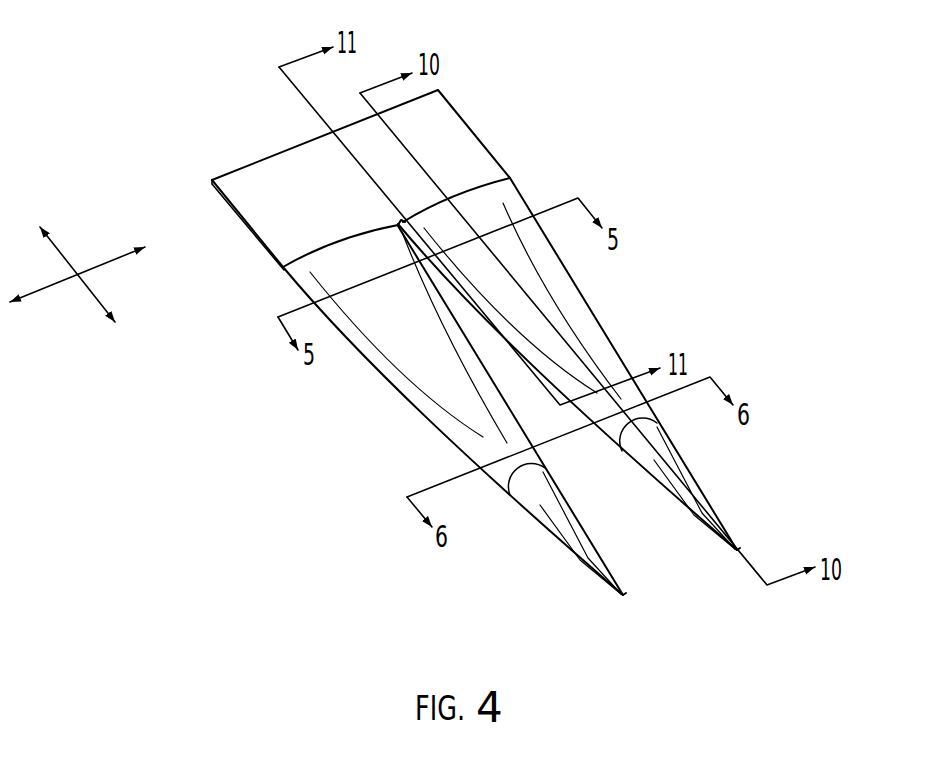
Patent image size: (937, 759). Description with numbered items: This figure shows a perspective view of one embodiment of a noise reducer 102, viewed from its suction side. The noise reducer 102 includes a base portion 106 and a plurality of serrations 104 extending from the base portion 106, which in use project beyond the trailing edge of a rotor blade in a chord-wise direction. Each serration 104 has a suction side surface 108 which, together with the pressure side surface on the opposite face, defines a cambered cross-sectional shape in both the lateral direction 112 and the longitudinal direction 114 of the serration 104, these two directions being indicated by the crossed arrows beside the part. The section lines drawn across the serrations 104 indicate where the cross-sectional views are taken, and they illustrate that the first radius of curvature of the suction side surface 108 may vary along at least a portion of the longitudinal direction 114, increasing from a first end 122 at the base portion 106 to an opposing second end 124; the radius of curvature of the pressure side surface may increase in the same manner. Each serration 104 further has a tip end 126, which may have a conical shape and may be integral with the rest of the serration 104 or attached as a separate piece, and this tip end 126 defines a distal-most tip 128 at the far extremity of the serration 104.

The noise reducer 102 is at (688, 190).
The serration 104 is at (420, 418).
The base portion 106 is at (261, 164).
The suction side surface 108 is at (374, 320).
The lateral direction 112 is at (90, 268).
The longitudinal direction 114 is at (87, 290).
The first end 122 is at (291, 284).
The second end 124 is at (507, 488).
The tip end 126 is at (553, 543).
The distal-most tip 128 is at (737, 552).